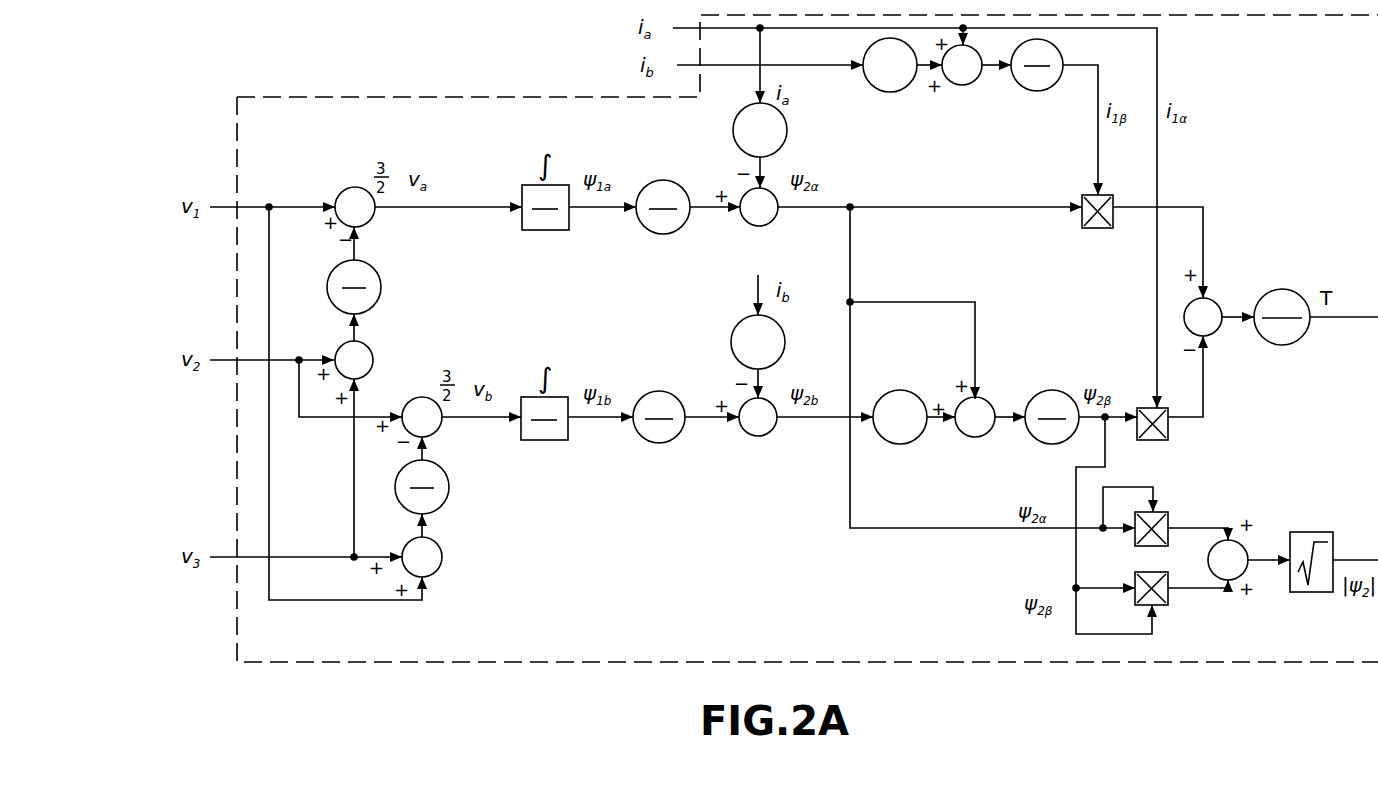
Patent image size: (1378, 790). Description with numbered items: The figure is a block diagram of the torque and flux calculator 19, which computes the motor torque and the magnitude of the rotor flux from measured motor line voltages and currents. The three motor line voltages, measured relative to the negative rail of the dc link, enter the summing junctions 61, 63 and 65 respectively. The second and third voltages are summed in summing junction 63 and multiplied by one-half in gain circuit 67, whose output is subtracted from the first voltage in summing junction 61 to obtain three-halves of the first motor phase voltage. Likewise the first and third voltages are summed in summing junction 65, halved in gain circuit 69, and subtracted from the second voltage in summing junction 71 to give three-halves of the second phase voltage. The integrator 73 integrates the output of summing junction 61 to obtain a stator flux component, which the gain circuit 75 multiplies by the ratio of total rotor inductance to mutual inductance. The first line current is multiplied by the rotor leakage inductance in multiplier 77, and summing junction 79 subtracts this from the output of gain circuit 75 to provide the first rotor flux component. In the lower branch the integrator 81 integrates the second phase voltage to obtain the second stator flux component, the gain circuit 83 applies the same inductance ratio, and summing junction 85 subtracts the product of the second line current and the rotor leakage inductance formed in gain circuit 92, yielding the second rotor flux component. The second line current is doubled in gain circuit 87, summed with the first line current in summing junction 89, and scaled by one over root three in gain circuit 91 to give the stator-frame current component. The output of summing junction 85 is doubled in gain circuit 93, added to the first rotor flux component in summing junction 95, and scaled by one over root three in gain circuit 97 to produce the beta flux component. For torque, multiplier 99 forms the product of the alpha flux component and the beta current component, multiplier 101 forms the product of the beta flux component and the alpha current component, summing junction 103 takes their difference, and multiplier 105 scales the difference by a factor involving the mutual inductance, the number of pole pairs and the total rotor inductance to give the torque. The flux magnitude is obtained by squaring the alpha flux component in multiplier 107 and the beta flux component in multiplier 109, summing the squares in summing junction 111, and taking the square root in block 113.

The torque and flux calculator 19 is at (550, 96).
The summing junction 61 is at (342, 192).
The summing junction 63 is at (372, 352).
The summing junction 65 is at (442, 556).
The gain circuit 67 is at (380, 278).
The gain circuit 69 is at (449, 491).
The summing junction 71 is at (441, 428).
The integrator 73 is at (545, 232).
The gain circuit 75 is at (664, 181).
The multiplier 77 is at (787, 130).
The summing junction 79 is at (774, 221).
The integrator 81 is at (547, 441).
The gain circuit 83 is at (668, 380).
The summing junction 85 is at (772, 432).
The gain circuit 87 is at (876, 92).
The summing junction 89 is at (962, 85).
The gain circuit 91 is at (1033, 91).
The gain circuit 92 is at (785, 338).
The gain circuit 93 is at (910, 394).
The summing junction 95 is at (975, 438).
The gain circuit 97 is at (1058, 392).
The multiplier 99 is at (1098, 228).
The multiplier 101 is at (1158, 442).
The summing junction 103 is at (1216, 331).
The multiplier 105 is at (1304, 296).
The multiplier 107 is at (1168, 514).
The multiplier 109 is at (1168, 604).
The summing junction 111 is at (1208, 558).
The square root block 113 is at (1310, 532).